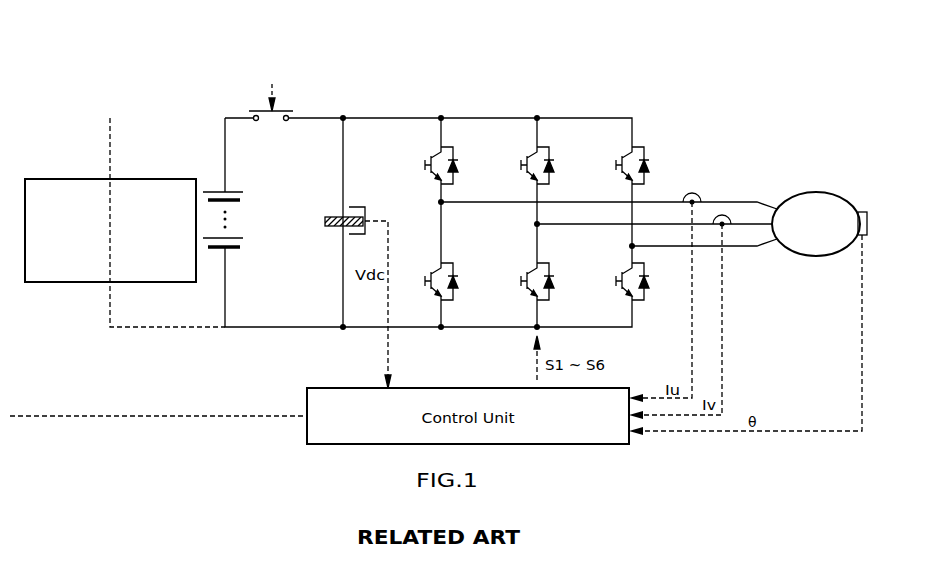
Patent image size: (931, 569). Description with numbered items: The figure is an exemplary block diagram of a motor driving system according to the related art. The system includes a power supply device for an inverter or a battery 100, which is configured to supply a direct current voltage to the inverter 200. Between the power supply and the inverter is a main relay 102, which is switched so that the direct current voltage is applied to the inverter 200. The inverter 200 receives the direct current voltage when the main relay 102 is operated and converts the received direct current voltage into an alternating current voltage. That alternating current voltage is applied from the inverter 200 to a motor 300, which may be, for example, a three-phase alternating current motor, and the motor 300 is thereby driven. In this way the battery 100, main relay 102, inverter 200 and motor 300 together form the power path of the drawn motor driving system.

The power supply device for an inverter or a battery 100 is at (196, 277).
The main relay 102 is at (281, 111).
The inverter 200 is at (632, 108).
The motor 300 is at (815, 192).